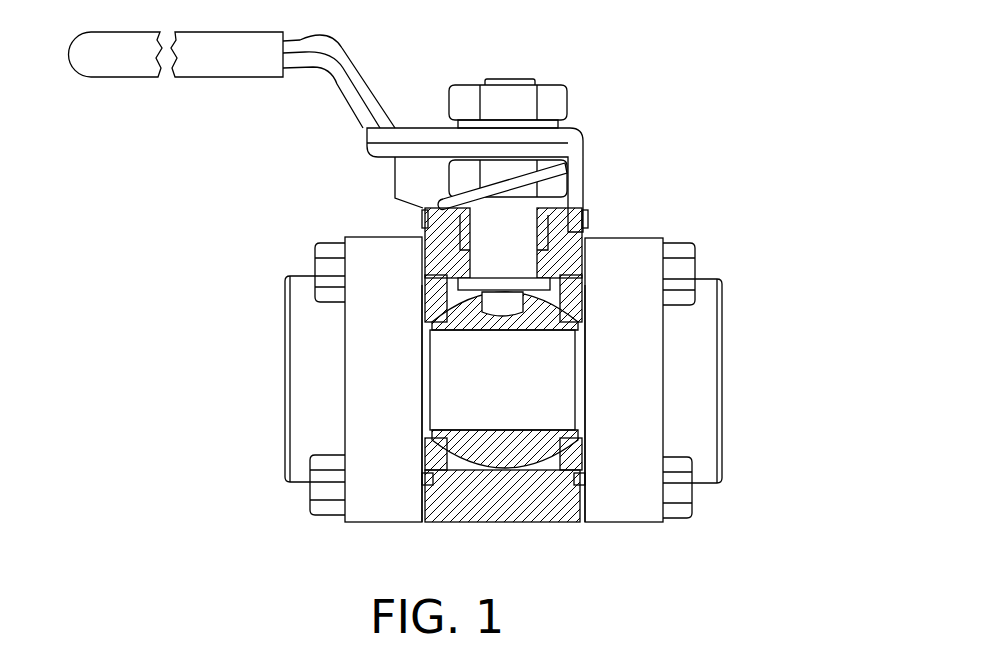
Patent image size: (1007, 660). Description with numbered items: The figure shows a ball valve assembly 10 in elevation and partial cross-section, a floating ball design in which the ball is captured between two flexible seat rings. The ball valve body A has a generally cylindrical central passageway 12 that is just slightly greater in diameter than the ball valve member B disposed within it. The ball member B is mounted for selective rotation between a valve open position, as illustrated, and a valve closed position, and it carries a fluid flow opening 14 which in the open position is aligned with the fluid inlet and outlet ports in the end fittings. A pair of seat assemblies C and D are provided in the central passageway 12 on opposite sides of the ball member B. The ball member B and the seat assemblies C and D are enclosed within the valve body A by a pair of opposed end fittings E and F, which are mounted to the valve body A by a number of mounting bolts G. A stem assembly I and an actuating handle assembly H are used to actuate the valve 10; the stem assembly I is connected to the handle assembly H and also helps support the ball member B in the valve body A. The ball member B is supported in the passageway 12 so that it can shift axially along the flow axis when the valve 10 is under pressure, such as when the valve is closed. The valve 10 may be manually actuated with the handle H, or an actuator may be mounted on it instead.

The ball valve assembly 10 is at (414, 297).
The central passageway 12 is at (542, 468).
The fluid flow opening 14 is at (514, 393).
The ball valve body A is at (458, 527).
The ball valve member B is at (514, 447).
The seat assembly C is at (596, 305).
The seat assembly D is at (410, 447).
The end fitting E is at (320, 350).
The end fitting F is at (615, 262).
The mounting bolts G is at (310, 248).
The actuating handle assembly H is at (362, 50).
The stem assembly I is at (516, 239).